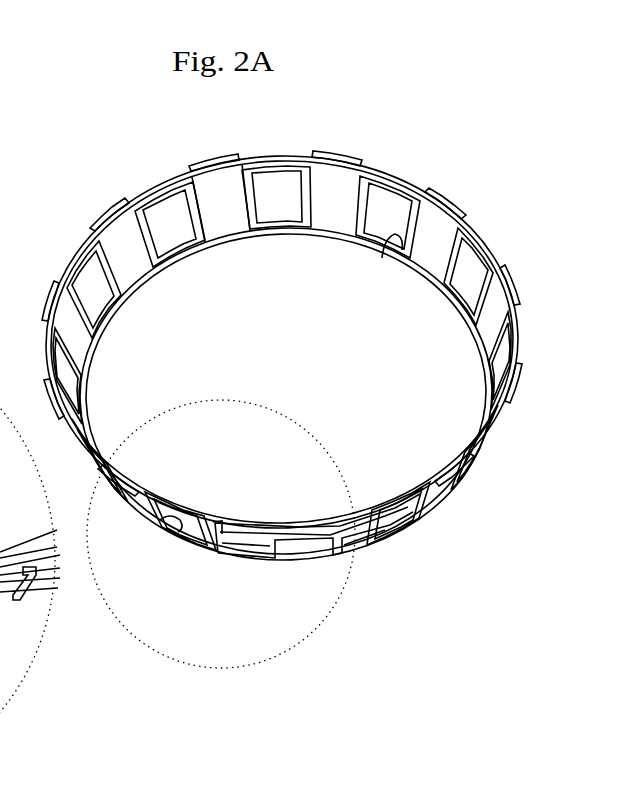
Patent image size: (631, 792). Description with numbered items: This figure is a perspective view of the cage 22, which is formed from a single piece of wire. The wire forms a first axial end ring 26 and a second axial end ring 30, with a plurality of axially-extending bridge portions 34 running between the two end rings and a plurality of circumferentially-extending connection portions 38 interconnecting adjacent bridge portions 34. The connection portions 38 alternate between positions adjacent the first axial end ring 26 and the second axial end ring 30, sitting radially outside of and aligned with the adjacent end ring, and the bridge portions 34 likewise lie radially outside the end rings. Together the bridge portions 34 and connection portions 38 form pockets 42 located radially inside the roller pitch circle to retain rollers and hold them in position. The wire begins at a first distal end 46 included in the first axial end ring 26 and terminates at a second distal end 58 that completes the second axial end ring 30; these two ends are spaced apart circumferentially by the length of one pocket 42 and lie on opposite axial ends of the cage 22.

The cage 22 is at (88, 156).
The first axial end ring 26 is at (263, 528).
The second axial end ring 30 is at (335, 237).
The bridge portion 34 is at (250, 202).
The connection portion 38 is at (353, 153).
The pocket 42 is at (113, 240).
The first distal end 46 is at (220, 522).
The second distal end 58 is at (188, 537).